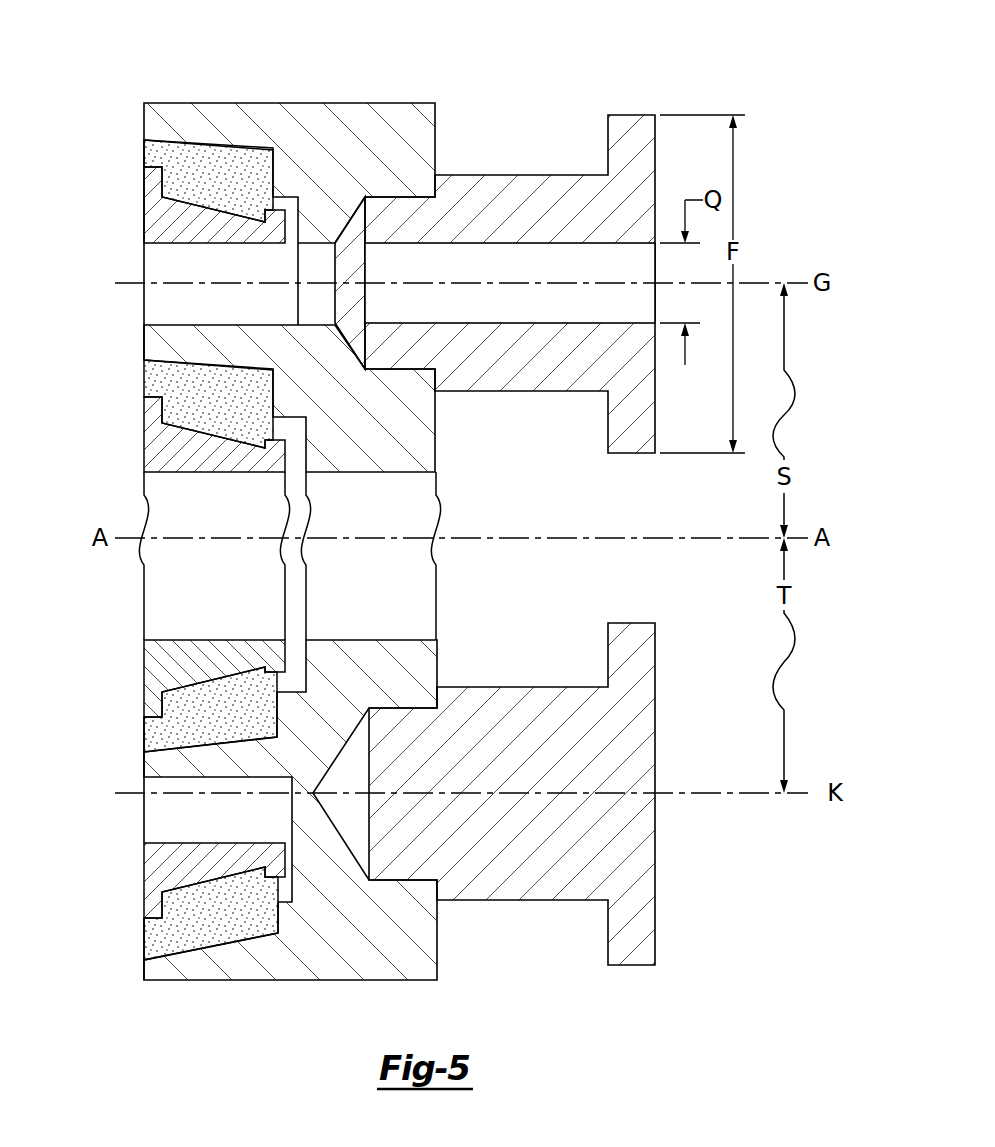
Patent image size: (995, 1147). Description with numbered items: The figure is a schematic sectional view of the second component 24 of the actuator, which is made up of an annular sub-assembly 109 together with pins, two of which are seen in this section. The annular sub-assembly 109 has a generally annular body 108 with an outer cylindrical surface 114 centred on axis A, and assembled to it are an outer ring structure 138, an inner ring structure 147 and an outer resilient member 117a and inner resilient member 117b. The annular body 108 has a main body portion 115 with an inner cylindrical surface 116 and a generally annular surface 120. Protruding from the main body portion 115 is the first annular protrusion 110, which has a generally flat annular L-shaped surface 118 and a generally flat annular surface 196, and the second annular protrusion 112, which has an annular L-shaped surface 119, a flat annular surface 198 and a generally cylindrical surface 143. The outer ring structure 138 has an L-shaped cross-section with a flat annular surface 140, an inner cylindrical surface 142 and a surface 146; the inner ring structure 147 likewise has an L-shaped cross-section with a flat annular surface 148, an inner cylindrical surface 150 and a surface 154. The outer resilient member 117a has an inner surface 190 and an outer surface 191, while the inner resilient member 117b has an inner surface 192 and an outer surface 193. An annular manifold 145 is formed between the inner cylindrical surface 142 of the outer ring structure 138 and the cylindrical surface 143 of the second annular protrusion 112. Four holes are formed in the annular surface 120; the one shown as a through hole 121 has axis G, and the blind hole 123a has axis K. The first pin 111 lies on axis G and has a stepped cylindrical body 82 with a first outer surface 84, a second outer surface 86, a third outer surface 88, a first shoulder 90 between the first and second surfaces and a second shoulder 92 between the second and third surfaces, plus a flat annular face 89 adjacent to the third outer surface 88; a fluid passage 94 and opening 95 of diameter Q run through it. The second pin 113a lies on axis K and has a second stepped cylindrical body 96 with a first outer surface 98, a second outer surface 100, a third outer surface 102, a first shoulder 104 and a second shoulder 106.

The second component 24 is at (340, 102).
The stepped cylindrical body 82 is at (512, 392).
The first outer surface 84 is at (410, 193).
The second outer surface 86 is at (568, 177).
The third outer surface 88 is at (623, 114).
The flat annular face 89 is at (657, 152).
The first shoulder 90 is at (425, 190).
The second shoulder 92 is at (608, 140).
The fluid passage 94 is at (557, 280).
The opening 95 is at (655, 272).
The second stepped cylindrical body 96 is at (568, 687).
The first outer surface 98 is at (425, 705).
The second outer surface 100 is at (498, 900).
The third outer surface 102 is at (632, 622).
The first shoulder 104 is at (420, 893).
The second shoulder 106 is at (608, 653).
The annular body 108 is at (200, 102).
The annular sub-assembly 109 is at (238, 72).
The first annular protrusion 110 is at (157, 967).
The first pin 111 is at (489, 408).
The second annular protrusion 112 is at (157, 760).
The second pin 113a is at (570, 915).
The outer cylindrical surface 114 is at (298, 102).
The main body portion 115 is at (316, 145).
The inner cylindrical surface 116 is at (340, 473).
The outer resilient member 117a is at (155, 152).
The inner resilient member 117b is at (183, 725).
The L-shaped surface 118 is at (275, 172).
The L-shaped surface 119 is at (275, 392).
The annular surface 120 is at (435, 135).
The through hole 121 is at (390, 380).
The blind hole 123a is at (366, 802).
The outer ring structure 138 is at (150, 212).
The flat annular surface 140 is at (147, 190).
The inner cylindrical surface 142 is at (202, 245).
The cylindrical surface 143 is at (282, 327).
The annular manifold 145 is at (160, 272).
The surface 146 is at (163, 183).
The inner ring structure 147 is at (155, 440).
The flat annular surface 148 is at (160, 410).
The inner cylindrical surface 150 is at (200, 473).
The surface 154 is at (163, 403).
The inner surface 190 is at (163, 892).
The outer surface 191 is at (150, 948).
The inner surface 192 is at (163, 692).
The outer surface 193 is at (182, 752).
The flat annular surface 196 is at (144, 128).
The flat annular surface 198 is at (144, 333).